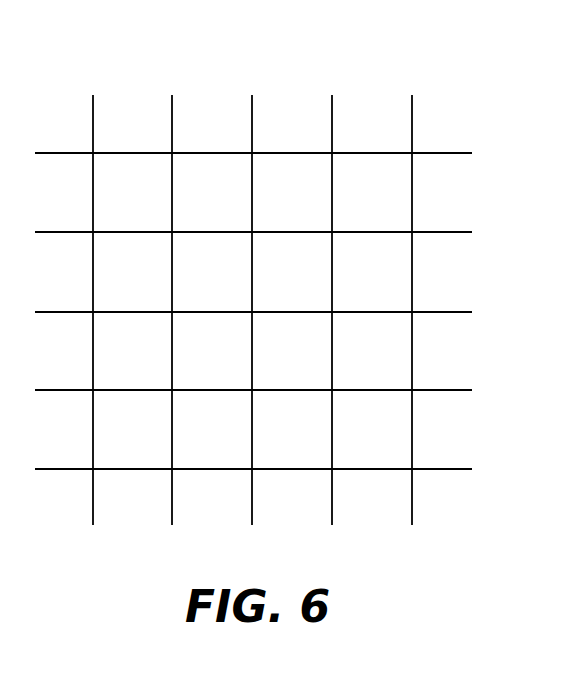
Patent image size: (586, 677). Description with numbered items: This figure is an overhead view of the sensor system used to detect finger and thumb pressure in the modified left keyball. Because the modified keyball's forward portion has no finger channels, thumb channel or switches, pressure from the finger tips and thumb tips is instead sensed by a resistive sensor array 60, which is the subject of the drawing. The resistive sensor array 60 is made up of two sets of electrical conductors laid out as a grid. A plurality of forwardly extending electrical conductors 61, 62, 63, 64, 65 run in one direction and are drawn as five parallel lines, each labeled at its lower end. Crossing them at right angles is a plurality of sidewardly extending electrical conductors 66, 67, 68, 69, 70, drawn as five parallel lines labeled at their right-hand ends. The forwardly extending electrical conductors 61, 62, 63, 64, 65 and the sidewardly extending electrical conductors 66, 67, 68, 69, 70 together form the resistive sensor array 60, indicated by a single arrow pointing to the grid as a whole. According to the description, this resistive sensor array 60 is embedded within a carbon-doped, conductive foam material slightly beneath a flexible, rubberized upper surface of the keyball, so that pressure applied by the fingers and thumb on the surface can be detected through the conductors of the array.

The resistive sensor array 60 is at (443, 67).
The forwardly extending electrical conductor 61 is at (93, 508).
The forwardly extending electrical conductor 62 is at (172, 508).
The forwardly extending electrical conductor 63 is at (252, 508).
The forwardly extending electrical conductor 64 is at (332, 508).
The forwardly extending electrical conductor 65 is at (412, 508).
The sidewardly extending electrical conductor 66 is at (460, 153).
The sidewardly extending electrical conductor 67 is at (460, 232).
The sidewardly extending electrical conductor 68 is at (460, 312).
The sidewardly extending electrical conductor 69 is at (460, 390).
The sidewardly extending electrical conductor 70 is at (460, 469).